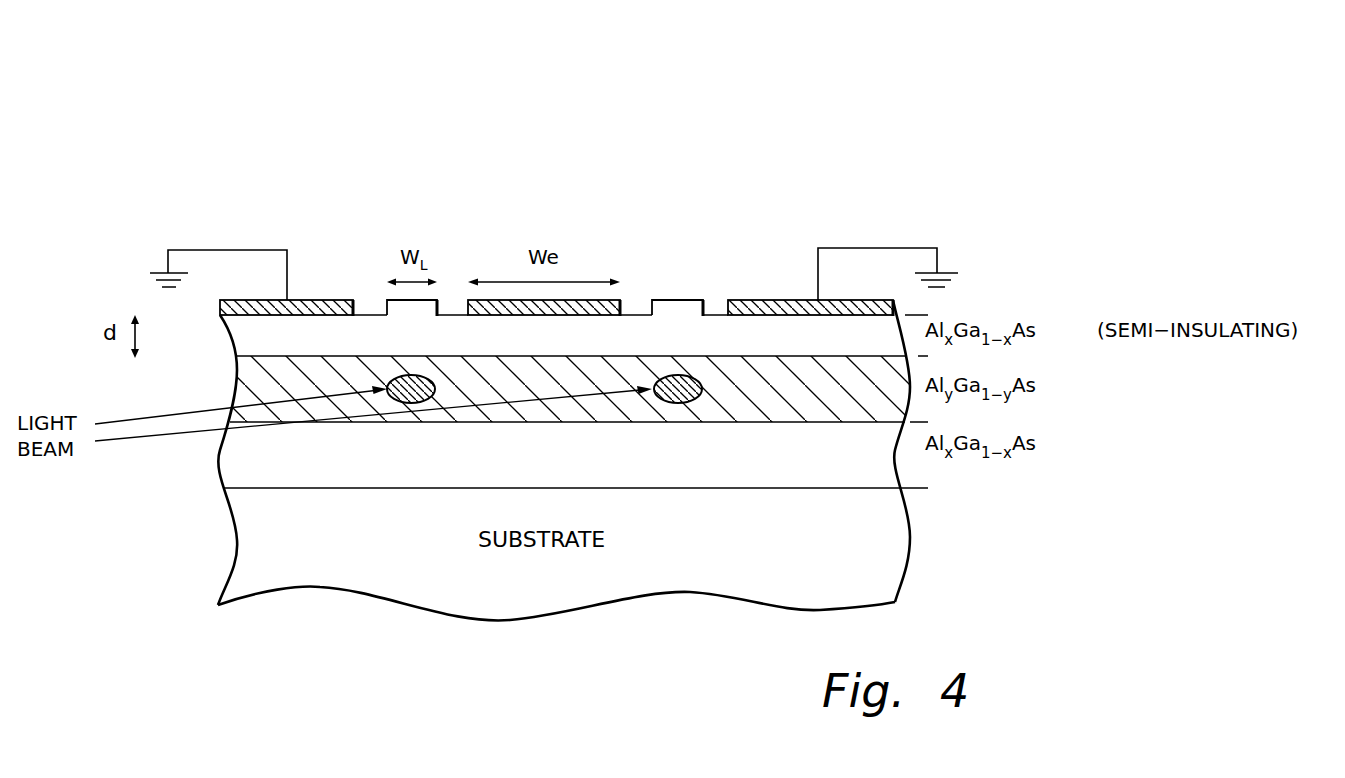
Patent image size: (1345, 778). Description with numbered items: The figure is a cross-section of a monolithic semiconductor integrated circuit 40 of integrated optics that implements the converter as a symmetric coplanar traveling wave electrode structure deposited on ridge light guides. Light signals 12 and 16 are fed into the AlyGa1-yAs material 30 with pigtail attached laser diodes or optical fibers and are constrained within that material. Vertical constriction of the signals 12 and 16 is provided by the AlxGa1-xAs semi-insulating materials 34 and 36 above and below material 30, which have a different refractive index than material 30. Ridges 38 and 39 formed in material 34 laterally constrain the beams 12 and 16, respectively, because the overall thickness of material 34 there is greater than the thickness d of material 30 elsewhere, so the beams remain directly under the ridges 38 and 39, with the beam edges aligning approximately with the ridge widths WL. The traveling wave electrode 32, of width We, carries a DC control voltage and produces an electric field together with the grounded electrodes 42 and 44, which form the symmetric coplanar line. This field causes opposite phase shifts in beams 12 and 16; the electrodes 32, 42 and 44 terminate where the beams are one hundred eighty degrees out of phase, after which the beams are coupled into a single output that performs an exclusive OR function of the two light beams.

The light signal 12 is at (435, 389).
The light signal 16 is at (702, 385).
The AlyGa1-yAs material 30 is at (235, 384).
The traveling wave electrode 32 is at (620, 300).
The AlxGa1-xAs semi-insulating material 34 is at (222, 340).
The AlxGa1-xAs semi-insulating material 36 is at (220, 443).
The ridge 38 is at (437, 300).
The ridge 39 is at (703, 300).
The monolithic semiconductor integrated circuit 40 is at (592, 118).
The grounded electrode 42 is at (314, 300).
The grounded electrode 44 is at (758, 300).